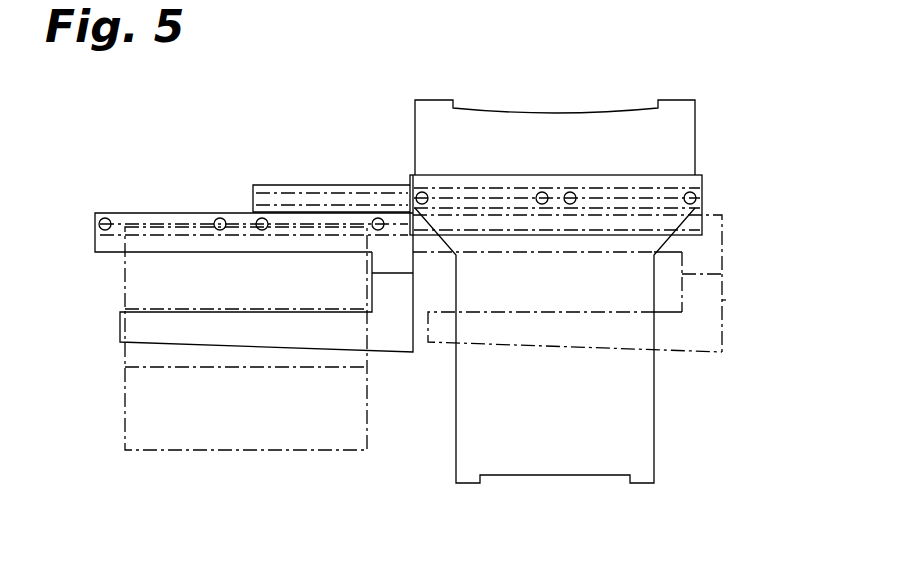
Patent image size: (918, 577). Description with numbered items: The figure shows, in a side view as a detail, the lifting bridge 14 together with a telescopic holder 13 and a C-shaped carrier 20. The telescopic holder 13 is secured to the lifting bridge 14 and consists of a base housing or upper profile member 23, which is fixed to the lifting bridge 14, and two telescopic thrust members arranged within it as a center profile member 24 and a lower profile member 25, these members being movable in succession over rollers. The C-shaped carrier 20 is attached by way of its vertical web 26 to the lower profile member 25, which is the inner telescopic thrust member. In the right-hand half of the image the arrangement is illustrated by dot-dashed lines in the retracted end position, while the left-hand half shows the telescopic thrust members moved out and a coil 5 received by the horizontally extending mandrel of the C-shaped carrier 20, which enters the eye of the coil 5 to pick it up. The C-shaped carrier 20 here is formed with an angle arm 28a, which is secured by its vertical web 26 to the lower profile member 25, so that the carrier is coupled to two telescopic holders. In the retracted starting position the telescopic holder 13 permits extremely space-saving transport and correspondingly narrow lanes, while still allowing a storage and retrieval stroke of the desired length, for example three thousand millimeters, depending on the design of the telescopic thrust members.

The coil 5 is at (152, 430).
The telescopic holder 13 is at (388, 173).
The lifting bridge 14 is at (632, 128).
The C-shaped carrier 20 is at (730, 273).
The upper profile member 23 is at (655, 188).
The center profile member 24 is at (292, 198).
The lower profile member 25 is at (118, 222).
The vertical web 26 is at (710, 247).
The angle arm 28a is at (724, 302).